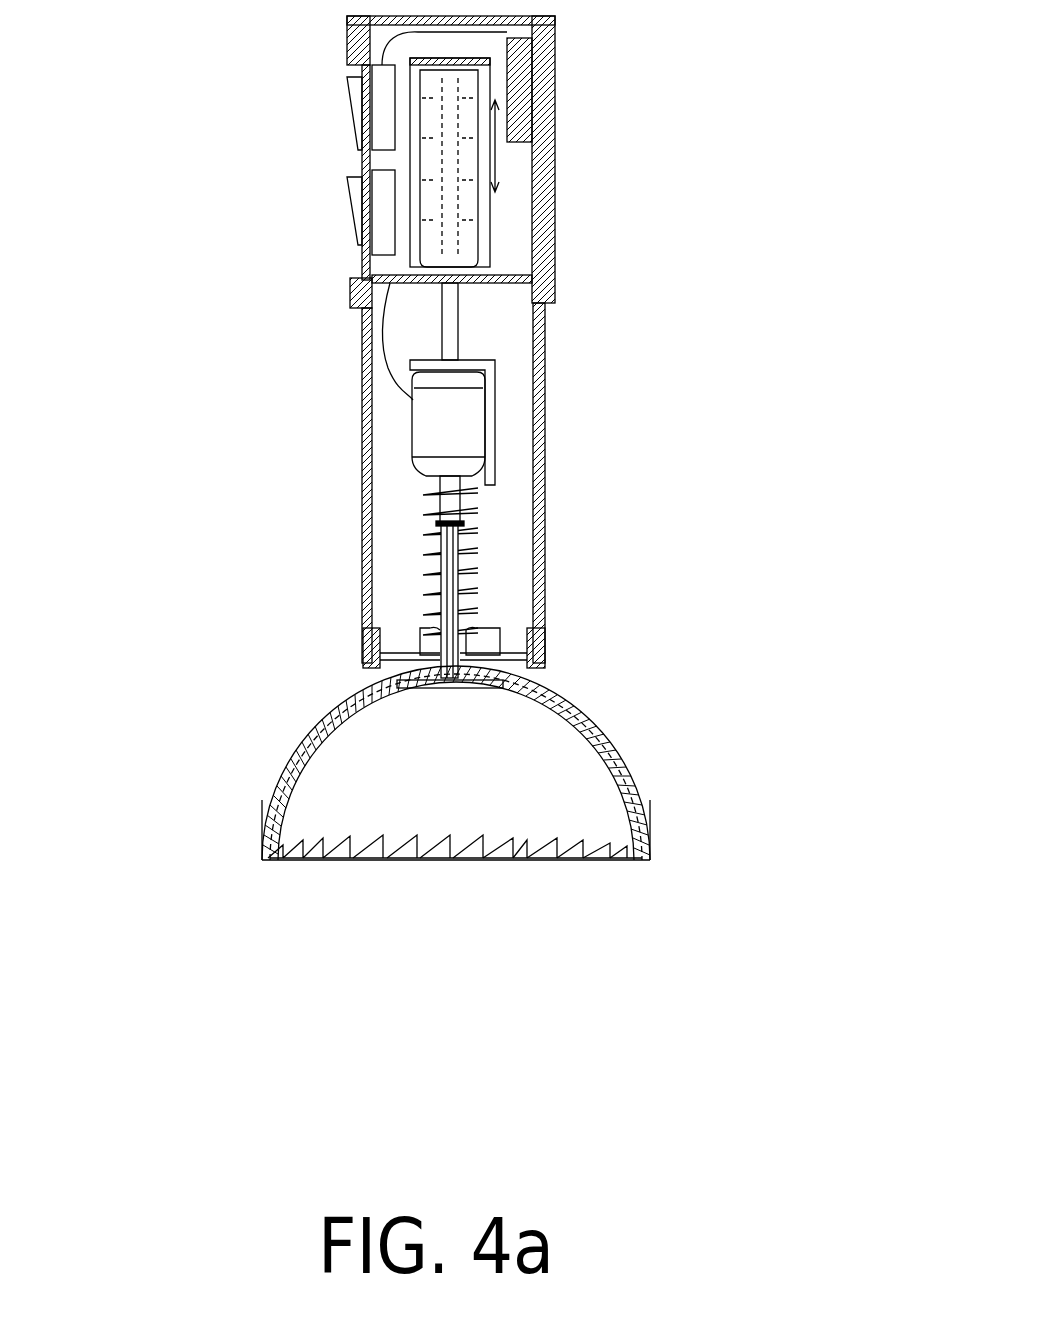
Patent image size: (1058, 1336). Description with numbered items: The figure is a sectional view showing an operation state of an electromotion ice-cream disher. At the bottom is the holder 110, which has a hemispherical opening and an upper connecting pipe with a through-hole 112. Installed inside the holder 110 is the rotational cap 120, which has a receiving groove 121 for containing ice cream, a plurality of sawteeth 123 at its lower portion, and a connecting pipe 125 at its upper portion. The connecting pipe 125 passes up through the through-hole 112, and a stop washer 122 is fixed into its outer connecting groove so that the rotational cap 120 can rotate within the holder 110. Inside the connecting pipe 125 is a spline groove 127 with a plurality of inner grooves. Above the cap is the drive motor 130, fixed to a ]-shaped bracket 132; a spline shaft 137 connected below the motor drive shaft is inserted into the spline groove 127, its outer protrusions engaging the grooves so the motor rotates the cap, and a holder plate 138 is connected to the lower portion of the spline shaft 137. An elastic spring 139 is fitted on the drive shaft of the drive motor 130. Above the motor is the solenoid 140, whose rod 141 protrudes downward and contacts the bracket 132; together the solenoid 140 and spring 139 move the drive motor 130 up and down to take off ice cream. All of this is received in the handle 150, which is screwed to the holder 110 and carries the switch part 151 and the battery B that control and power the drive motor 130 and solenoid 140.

The holder 110 is at (300, 723).
The through-hole 112 is at (397, 653).
The rotational cap 120 is at (260, 827).
The receiving groove 121 is at (322, 803).
The stop washer 122 is at (360, 660).
The sawteeth 123 is at (438, 840).
The connecting pipe 125 is at (437, 652).
The spline groove 127 is at (500, 627).
The drive motor 130 is at (420, 407).
The ]-shaped bracket 132 is at (495, 375).
The spline shaft 137 is at (458, 573).
The holder plate 138 is at (495, 688).
The elastic spring 139 is at (440, 515).
The solenoid 140 is at (472, 203).
The rod 141 is at (455, 322).
The handle 150 is at (547, 460).
The switch part 151 is at (357, 175).
The battery B is at (530, 75).